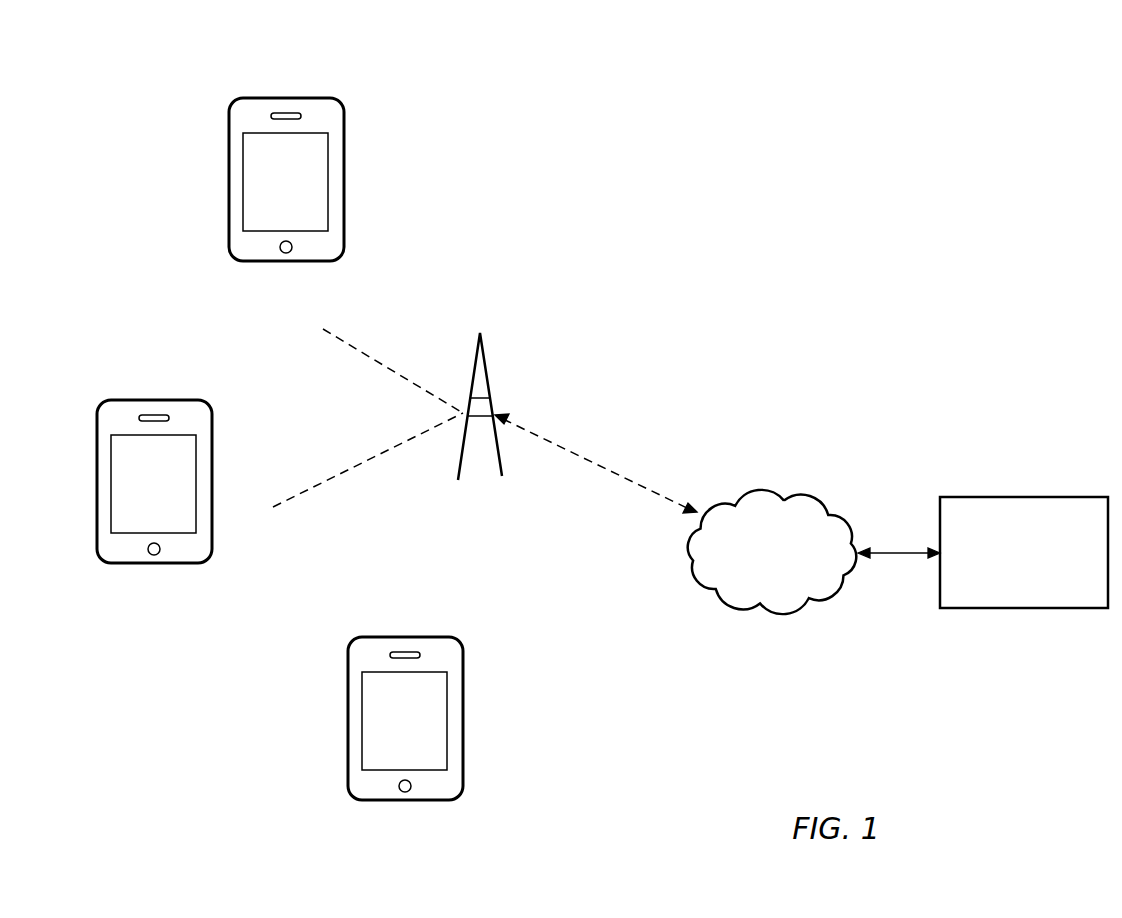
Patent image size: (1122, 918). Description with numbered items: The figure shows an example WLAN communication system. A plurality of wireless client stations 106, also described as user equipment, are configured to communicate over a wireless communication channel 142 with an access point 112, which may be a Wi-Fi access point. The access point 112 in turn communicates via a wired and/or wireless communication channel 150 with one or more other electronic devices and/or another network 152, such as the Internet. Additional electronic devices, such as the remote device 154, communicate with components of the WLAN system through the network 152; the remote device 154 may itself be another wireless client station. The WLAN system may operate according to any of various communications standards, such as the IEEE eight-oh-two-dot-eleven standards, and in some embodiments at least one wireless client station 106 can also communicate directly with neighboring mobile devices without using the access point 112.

The wireless client station 106 is at (286, 261).
The access point 112 is at (497, 480).
The wireless communication channel 142 is at (380, 455).
The communication channel 150 is at (603, 467).
The network 152 is at (772, 552).
The remote device 154 is at (1024, 552).